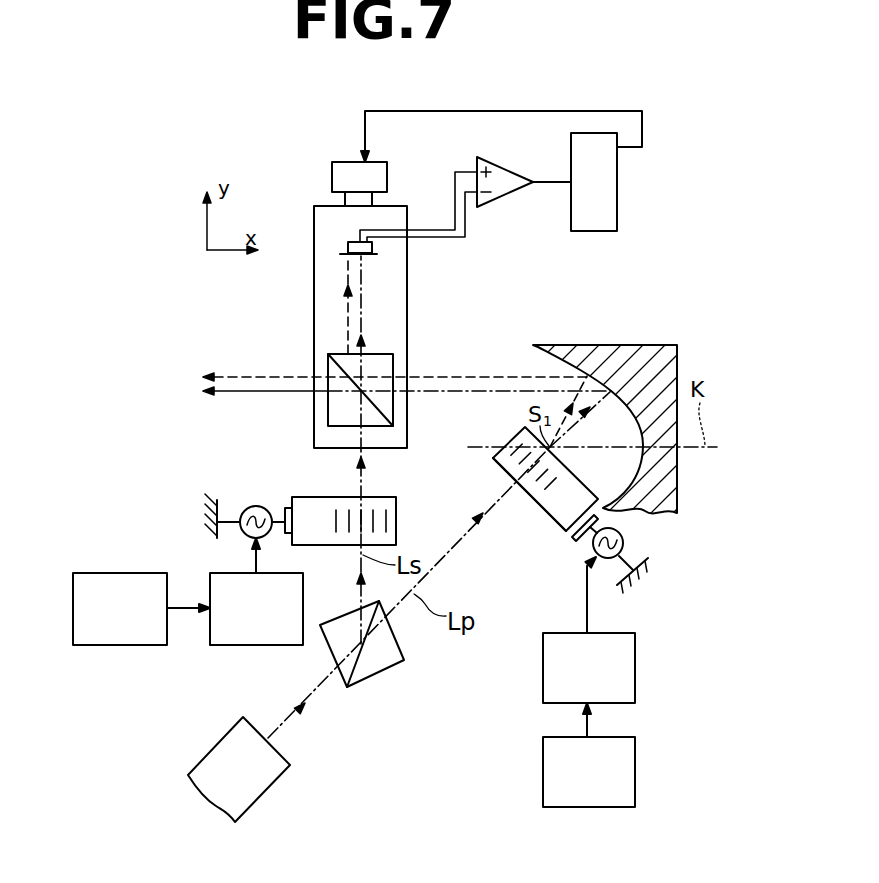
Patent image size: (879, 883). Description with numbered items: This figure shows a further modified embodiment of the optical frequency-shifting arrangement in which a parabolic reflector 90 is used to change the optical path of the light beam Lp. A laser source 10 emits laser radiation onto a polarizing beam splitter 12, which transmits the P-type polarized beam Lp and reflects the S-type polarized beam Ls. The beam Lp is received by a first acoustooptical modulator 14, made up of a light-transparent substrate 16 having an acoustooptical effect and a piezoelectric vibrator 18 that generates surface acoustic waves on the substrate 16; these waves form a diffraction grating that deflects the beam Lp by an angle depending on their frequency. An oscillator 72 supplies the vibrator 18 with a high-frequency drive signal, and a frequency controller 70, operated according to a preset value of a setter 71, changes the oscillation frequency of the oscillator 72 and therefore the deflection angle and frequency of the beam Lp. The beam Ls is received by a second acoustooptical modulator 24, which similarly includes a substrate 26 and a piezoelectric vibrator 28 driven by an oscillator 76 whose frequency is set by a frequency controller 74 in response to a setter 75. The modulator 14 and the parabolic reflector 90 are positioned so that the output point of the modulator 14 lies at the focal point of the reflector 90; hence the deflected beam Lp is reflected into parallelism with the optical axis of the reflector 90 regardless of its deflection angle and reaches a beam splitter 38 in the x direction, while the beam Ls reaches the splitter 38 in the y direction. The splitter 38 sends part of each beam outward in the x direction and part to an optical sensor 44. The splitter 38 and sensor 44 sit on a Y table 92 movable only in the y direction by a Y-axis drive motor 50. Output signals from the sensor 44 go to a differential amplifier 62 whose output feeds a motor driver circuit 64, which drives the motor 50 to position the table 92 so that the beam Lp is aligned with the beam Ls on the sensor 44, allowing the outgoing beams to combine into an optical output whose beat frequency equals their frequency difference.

The laser source 10 is at (260, 787).
The polarizing beam splitter 12 is at (367, 672).
The first acoustooptical modulator 14 is at (588, 468).
The light-transparent substrate 16 is at (543, 511).
The piezoelectric vibrator 18 is at (578, 539).
The second acoustooptical modulator 24 is at (356, 500).
The light-transparent substrate 26 is at (316, 503).
The piezoelectric vibrator 28 is at (285, 515).
The beam splitter 38 is at (336, 415).
The optical sensor 44 is at (348, 242).
The Y-axis drive motor 50 is at (345, 162).
The differential amplifier 62 is at (502, 176).
The motor driver circuit 64 is at (617, 205).
The frequency controller 70 is at (635, 670).
The setter 71 is at (635, 757).
The oscillator 72 is at (624, 543).
The frequency controller 74 is at (223, 580).
The setter 75 is at (126, 580).
The oscillator 76 is at (246, 510).
The parabolic reflector 90 is at (540, 351).
The Y table 92 is at (407, 278).